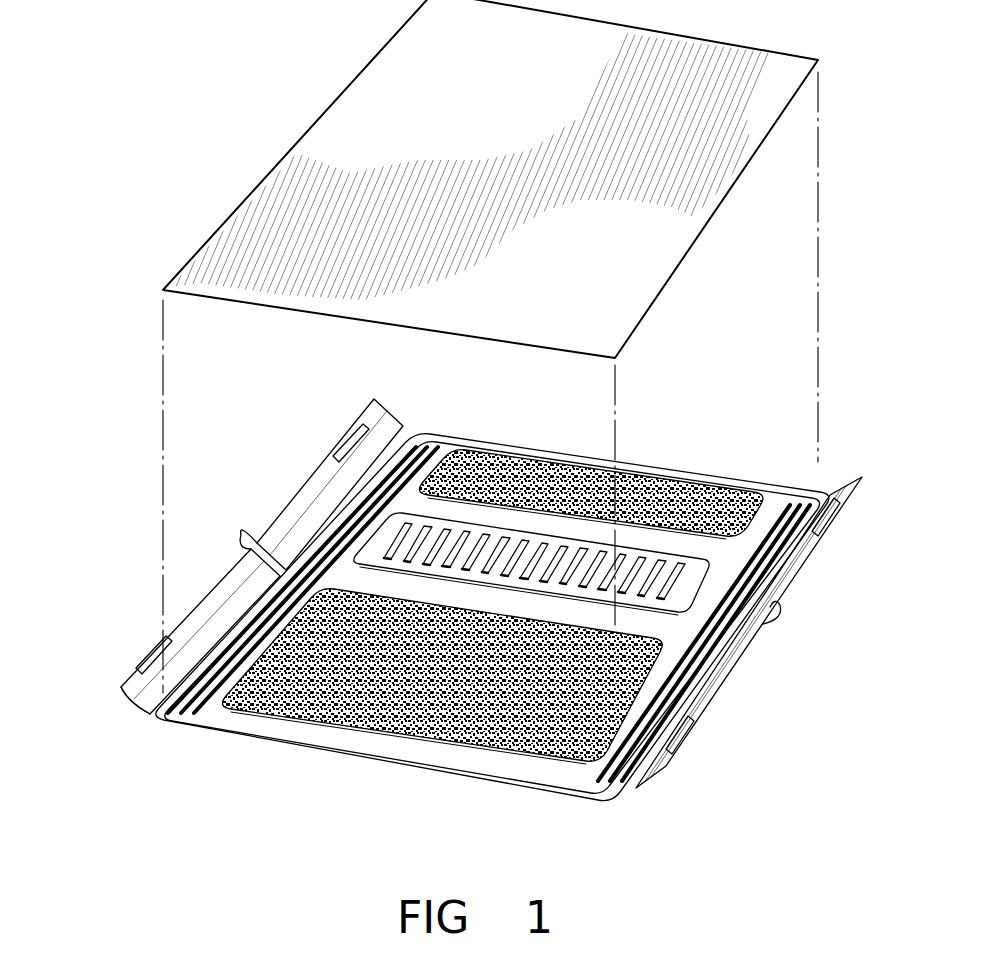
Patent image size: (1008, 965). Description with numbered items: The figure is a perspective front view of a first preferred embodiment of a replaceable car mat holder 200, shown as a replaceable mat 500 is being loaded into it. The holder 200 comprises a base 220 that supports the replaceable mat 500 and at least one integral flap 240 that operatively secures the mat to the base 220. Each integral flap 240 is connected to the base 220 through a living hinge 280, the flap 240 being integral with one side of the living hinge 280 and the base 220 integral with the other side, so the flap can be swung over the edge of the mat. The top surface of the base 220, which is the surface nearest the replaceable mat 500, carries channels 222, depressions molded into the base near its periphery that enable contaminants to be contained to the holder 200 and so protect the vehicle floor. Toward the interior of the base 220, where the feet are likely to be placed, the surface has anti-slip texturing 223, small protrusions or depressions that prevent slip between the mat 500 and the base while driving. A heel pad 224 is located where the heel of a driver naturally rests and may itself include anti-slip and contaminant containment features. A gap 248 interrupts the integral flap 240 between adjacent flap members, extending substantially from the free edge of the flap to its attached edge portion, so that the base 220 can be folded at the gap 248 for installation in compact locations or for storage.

The replaceable car mat holder 200 is at (459, 616).
The base 220 is at (250, 745).
The channels 222 is at (165, 725).
The anti-slip texturing 223 is at (672, 500).
The heel pad 224 is at (662, 587).
The integral flap 240 is at (313, 467).
The gap 248 is at (240, 524).
The living hinge 280 is at (150, 714).
The replaceable mat 500 is at (367, 103).